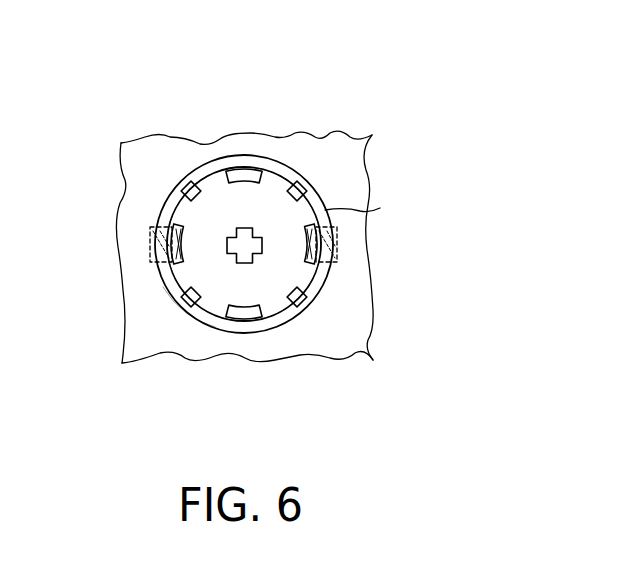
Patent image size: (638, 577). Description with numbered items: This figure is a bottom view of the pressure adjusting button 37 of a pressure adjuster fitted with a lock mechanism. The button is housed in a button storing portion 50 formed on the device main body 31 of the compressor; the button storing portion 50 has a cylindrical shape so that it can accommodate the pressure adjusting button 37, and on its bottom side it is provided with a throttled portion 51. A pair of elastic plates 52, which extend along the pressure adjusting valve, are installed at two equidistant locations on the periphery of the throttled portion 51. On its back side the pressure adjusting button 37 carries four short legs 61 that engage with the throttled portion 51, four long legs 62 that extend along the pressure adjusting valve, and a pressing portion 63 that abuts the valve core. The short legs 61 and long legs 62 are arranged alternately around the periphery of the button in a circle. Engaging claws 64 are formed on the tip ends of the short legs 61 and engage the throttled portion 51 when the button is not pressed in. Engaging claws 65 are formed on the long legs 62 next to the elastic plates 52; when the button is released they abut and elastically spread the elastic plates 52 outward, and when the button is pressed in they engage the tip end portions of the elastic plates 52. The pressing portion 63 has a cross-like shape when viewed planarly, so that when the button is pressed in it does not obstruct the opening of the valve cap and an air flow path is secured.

The device main body 31 is at (160, 155).
The pressure adjusting button 37 is at (287, 223).
The button storing portion 50 is at (170, 189).
The throttled portion 51 is at (165, 285).
The elastic plates 52 is at (150, 250).
The short legs 61 is at (199, 168).
The long legs 62 is at (232, 168).
The pressing portion 63 is at (257, 247).
The engaging claws 64 is at (182, 308).
The engaging claws 65 is at (157, 228).